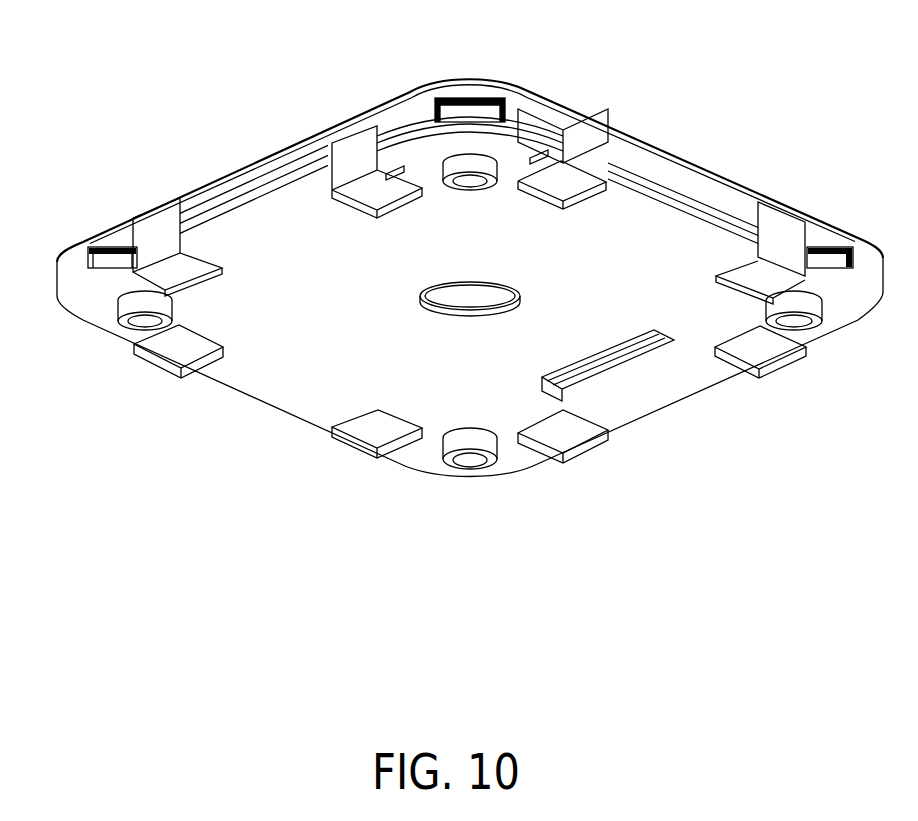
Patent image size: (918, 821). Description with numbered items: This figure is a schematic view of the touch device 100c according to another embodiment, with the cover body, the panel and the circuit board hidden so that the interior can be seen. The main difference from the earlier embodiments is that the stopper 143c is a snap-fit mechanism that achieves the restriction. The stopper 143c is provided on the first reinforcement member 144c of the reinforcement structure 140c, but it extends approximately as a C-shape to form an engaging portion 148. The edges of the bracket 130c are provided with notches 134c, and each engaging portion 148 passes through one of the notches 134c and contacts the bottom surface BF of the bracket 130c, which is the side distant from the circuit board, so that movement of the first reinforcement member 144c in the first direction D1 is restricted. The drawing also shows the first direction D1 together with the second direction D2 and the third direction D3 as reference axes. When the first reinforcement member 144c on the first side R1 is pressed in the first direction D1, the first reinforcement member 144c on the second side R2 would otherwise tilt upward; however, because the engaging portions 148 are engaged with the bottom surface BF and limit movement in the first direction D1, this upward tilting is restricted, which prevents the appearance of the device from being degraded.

The touch device 100c is at (828, 564).
The bracket 130c is at (563, 100).
The reinforcement structure 140c is at (469, 139).
The first reinforcement member 144c is at (473, 82).
The engaging portion 148 is at (343, 157).
The stopper 143c is at (595, 157).
The notches 134c is at (403, 167).
The first side R1 is at (203, 173).
The second side R2 is at (668, 381).
The bottom surface BF is at (628, 285).
The first direction D1 is at (130, 520).
The second direction D2 is at (130, 520).
The third direction D3 is at (130, 520).